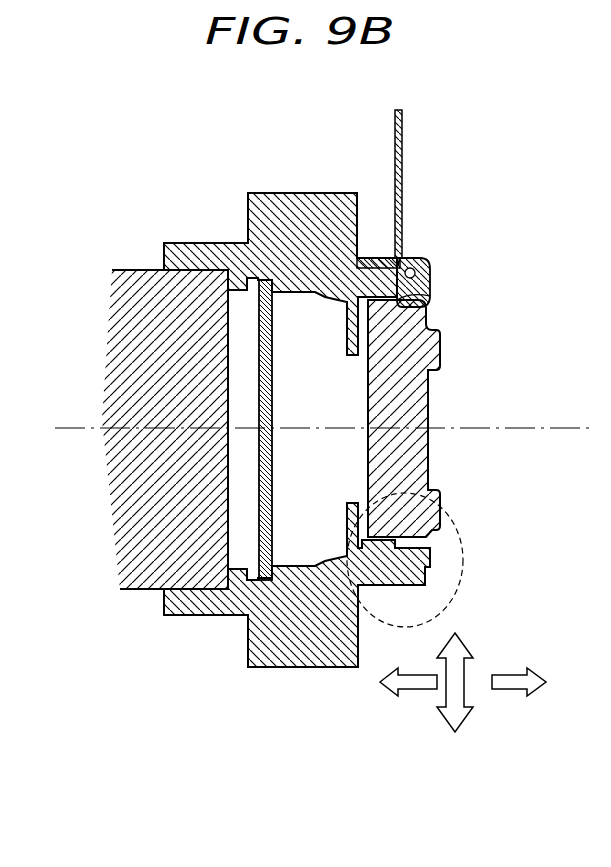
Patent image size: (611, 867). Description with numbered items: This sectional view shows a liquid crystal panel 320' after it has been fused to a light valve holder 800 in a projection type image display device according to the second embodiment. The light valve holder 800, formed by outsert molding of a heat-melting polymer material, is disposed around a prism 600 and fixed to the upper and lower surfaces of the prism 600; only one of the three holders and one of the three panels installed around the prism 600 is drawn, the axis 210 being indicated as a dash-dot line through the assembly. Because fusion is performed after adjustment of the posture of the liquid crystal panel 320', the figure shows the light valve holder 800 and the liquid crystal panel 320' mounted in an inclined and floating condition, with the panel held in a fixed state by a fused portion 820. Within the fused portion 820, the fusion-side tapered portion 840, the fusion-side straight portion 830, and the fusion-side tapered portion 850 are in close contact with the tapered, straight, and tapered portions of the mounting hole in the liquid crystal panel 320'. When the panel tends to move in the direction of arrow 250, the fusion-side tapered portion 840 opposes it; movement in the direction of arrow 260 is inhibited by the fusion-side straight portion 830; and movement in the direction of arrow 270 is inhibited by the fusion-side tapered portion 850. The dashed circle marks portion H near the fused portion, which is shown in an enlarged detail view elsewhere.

The optical axis 210 is at (560, 429).
The arrow 250 is at (537, 672).
The arrow 260 is at (460, 690).
The arrow 270 is at (410, 687).
The liquid crystal panel 320' is at (440, 418).
The prism 600 is at (140, 565).
The light valve holder 800 is at (278, 637).
The fused portion 820 is at (433, 290).
The fusion-side straight portion 830 is at (392, 258).
The fusion-side tapered portion 840 is at (433, 273).
The fusion-side tapered portion 850 is at (414, 264).
The portion H is at (416, 560).